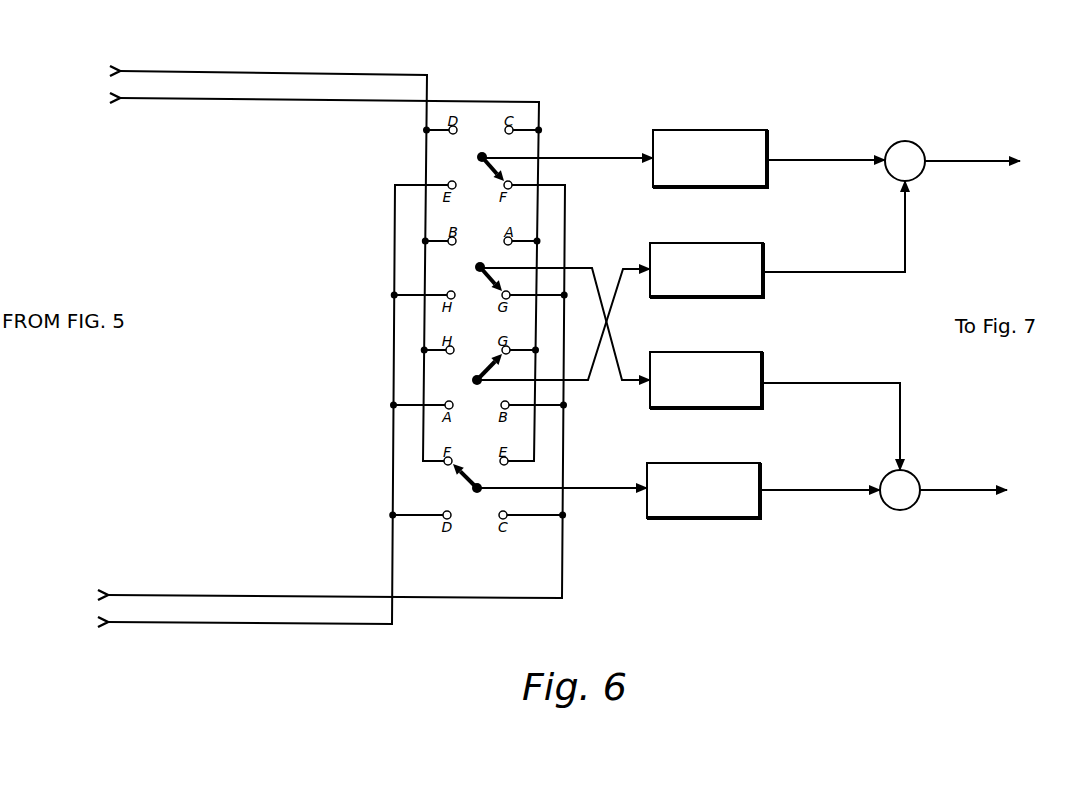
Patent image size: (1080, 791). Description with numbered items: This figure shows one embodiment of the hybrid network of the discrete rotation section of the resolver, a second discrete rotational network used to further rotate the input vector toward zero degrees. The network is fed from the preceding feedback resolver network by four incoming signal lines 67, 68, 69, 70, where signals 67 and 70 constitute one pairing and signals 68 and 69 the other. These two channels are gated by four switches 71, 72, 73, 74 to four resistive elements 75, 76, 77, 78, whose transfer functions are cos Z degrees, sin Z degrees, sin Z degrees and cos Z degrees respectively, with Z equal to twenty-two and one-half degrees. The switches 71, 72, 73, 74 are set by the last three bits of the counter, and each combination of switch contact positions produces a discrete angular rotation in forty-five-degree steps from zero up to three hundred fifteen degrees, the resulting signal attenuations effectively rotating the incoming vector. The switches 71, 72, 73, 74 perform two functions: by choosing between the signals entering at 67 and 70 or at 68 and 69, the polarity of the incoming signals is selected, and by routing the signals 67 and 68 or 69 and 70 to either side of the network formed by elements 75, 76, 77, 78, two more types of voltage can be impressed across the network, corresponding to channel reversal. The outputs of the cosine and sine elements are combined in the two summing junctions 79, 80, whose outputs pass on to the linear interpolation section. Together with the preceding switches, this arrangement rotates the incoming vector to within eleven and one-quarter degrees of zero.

The signal input 67 is at (255, 261).
The signal input 68 is at (302, 275).
The signal input 69 is at (313, 395).
The signal input 70 is at (254, 408).
The switch 71 is at (479, 160).
The switch 72 is at (477, 271).
The switch 73 is at (474, 377).
The switch 74 is at (467, 488).
The resistive element 75 is at (718, 130).
The resistive element 76 is at (700, 243).
The resistive element 77 is at (700, 352).
The resistive element 78 is at (698, 463).
The summing circuit 79 is at (913, 143).
The summing circuit 80 is at (913, 474).